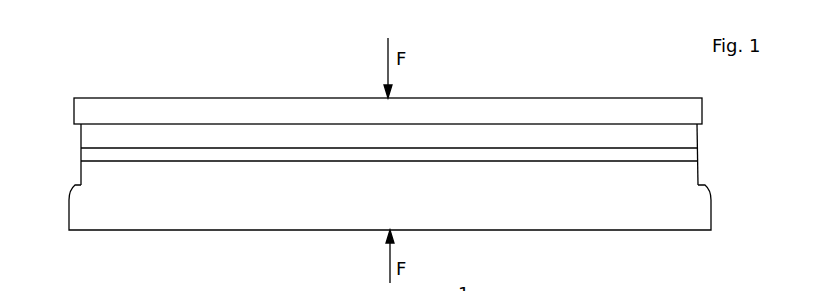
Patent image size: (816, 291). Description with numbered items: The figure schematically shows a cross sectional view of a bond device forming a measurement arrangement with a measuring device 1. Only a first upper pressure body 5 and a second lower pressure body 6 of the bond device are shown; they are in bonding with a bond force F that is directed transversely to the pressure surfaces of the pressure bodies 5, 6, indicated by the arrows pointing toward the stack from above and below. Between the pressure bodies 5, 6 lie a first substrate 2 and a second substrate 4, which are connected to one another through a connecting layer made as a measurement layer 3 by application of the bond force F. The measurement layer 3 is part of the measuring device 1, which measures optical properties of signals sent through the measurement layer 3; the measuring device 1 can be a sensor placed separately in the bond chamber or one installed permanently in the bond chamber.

The measuring device 1 is at (722, 125).
The first substrate 2 is at (87, 172).
The measurement layer 3 is at (420, 152).
The second substrate 4 is at (162, 125).
The first upper pressure body 5 is at (320, 111).
The second lower pressure body 6 is at (93, 203).